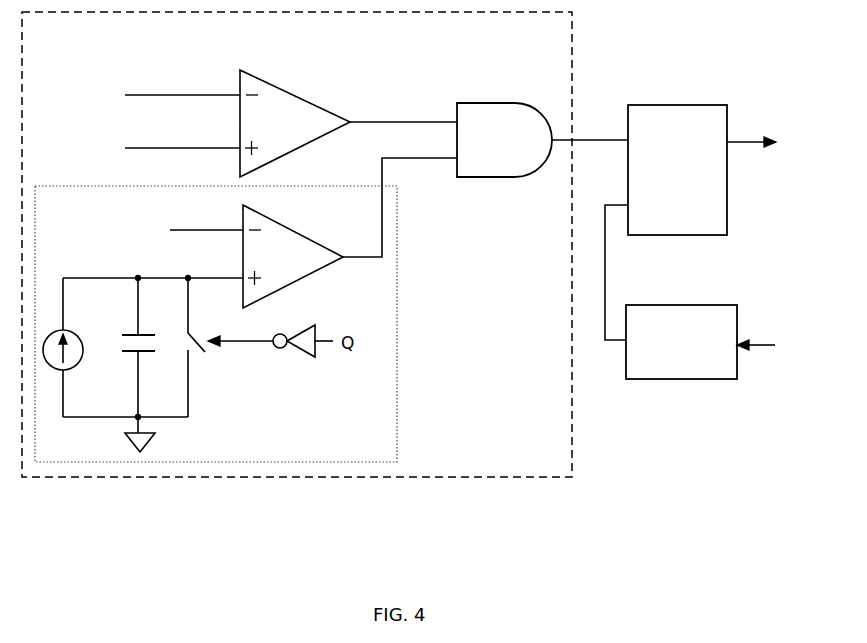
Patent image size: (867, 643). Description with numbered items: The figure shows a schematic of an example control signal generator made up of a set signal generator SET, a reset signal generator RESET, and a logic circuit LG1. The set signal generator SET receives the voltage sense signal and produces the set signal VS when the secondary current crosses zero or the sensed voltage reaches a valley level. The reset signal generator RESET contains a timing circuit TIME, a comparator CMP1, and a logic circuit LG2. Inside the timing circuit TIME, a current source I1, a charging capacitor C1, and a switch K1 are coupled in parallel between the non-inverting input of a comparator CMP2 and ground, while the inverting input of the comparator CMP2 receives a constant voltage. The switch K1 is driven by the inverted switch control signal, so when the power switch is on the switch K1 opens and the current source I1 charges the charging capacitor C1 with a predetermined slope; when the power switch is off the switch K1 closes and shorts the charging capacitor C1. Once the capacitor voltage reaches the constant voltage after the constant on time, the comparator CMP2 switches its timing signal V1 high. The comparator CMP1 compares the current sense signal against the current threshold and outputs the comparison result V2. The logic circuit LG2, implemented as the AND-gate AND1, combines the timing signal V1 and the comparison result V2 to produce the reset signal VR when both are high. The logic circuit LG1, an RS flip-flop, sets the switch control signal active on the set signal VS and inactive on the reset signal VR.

The reset signal generator RESET is at (297, 244).
The timing circuit TIME is at (216, 324).
The comparator CMP1 is at (231, 120).
The comparator CMP2 is at (225, 256).
The timing signal V1 is at (400, 207).
The comparison result V2 is at (403, 111).
The current source I1 is at (74, 347).
The charging capacitor C1 is at (145, 347).
The switch K1 is at (203, 347).
The logic circuit LG2 is at (504, 117).
The AND-gate AND1 is at (497, 103).
The reset signal VR is at (590, 127).
The logic circuit LG1 is at (691, 105).
The set signal VS is at (622, 272).
The set signal generator SET is at (719, 342).